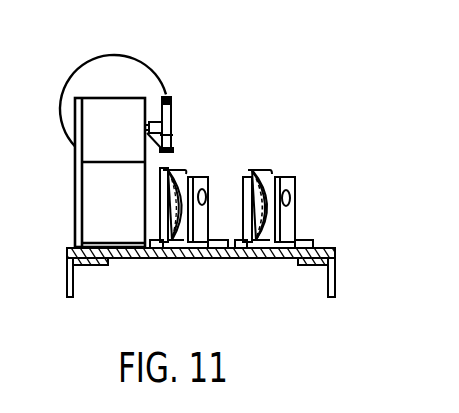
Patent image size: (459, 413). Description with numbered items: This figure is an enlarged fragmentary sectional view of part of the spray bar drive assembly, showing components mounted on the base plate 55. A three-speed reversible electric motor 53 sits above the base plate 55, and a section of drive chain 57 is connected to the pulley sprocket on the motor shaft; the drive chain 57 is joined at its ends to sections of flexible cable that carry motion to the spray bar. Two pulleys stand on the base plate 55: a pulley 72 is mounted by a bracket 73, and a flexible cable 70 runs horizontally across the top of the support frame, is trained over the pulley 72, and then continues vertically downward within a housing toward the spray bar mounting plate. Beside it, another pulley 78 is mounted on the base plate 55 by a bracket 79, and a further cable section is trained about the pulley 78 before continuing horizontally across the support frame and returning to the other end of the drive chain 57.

The electric motor 53 is at (125, 80).
The base plate 55 is at (223, 262).
The drive chain 57 is at (167, 100).
The flexible cable 70 is at (258, 165).
The pulley 72 is at (277, 172).
The bracket 73 is at (288, 220).
The pulley 78 is at (196, 168).
The bracket 79 is at (181, 254).